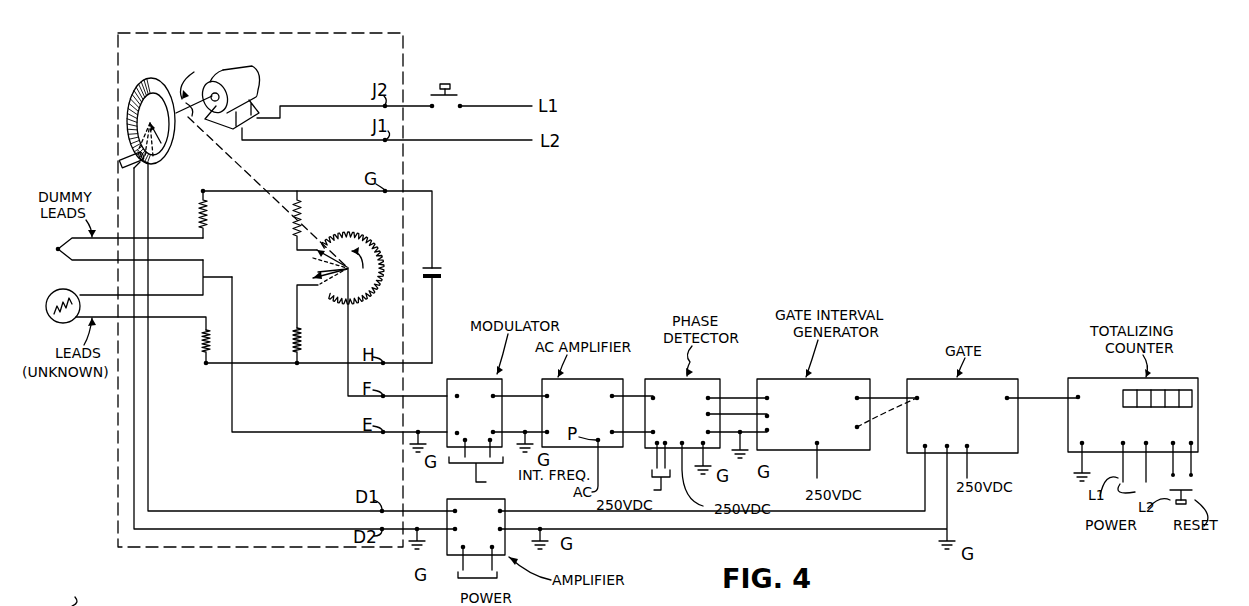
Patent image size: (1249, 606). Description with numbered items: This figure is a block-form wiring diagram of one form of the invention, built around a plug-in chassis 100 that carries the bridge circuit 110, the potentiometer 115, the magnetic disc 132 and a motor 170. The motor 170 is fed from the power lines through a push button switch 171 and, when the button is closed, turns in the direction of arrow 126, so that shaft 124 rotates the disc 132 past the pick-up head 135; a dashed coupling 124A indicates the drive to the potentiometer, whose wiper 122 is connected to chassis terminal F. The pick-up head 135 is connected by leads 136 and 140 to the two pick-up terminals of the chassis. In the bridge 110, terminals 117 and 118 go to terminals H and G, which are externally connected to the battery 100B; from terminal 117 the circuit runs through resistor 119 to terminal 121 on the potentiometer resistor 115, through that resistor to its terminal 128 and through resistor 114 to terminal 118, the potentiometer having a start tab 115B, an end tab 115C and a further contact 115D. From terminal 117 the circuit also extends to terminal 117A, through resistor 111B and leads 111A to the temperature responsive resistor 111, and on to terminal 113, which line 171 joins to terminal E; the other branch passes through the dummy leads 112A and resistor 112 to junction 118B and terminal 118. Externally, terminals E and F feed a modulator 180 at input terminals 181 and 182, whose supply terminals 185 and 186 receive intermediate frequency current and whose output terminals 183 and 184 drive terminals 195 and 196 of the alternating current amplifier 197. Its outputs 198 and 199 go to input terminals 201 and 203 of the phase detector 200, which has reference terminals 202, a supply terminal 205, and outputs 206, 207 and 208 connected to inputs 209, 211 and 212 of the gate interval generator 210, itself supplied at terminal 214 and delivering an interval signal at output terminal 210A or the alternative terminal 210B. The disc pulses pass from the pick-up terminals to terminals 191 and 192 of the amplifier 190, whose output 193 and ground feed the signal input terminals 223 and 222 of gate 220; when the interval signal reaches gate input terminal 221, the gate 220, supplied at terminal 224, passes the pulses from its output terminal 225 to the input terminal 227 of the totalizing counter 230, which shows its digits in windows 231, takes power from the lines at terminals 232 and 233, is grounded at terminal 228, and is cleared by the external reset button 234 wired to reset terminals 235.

The chassis 100 is at (393, 66).
The battery 100B is at (441, 278).
The bridge circuit 110 is at (261, 256).
The temperature responsive resistor 111 is at (57, 311).
The leads 111A is at (100, 295).
The resistor 111B is at (203, 340).
The resistor 112 is at (207, 213).
The dummy leads 112A is at (163, 259).
The terminal 113 is at (203, 278).
The resistor 114 is at (305, 210).
The potentiometer 115 is at (353, 232).
The start tab 115B is at (312, 280).
The end tab 115C is at (313, 250).
The wiper contact 115D is at (312, 259).
The bridge terminal 117 is at (297, 365).
The terminal 117A is at (206, 356).
The bridge terminal 118 is at (297, 191).
The junction 118B is at (203, 190).
The resistor 119 is at (301, 336).
The terminal 121 is at (318, 287).
The wiper 122 is at (346, 300).
The shaft 124 is at (181, 115).
The mechanical coupling 124A is at (252, 176).
The arrow 126 is at (194, 80).
The terminal 128 is at (320, 246).
The magnetic disc 132 is at (143, 80).
The pick-up head 135 is at (122, 157).
The lead 136 is at (148, 452).
The lead 140 is at (134, 484).
The motor 170 is at (250, 86).
The push button switch 171 is at (455, 94).
The modulator 180 is at (473, 376).
The input terminal 181 is at (458, 393).
The input terminal 182 is at (455, 430).
The output terminal 183 is at (495, 394).
The output terminal 184 is at (484, 470).
The supply terminal 185 is at (467, 438).
The supply terminal 186 is at (494, 430).
The amplifier 190 is at (444, 560).
The terminal 191 is at (455, 498).
The terminal 192 is at (455, 527).
The output terminal 193 is at (501, 511).
The terminal 195 is at (549, 396).
The terminal 196 is at (560, 420).
The alternating current amplifier 197 is at (580, 378).
The output terminal 198 is at (612, 398).
The output terminal 199 is at (612, 432).
The phase detector 200 is at (698, 377).
The input terminal 201 is at (655, 396).
The A.C. input terminals 202 is at (666, 460).
The input terminal 203 is at (656, 421).
The supply terminal 205 is at (684, 458).
The output terminal 206 is at (710, 396).
The output terminal 207 is at (710, 414).
The output terminal 208 is at (710, 436).
The input terminal 209 is at (769, 398).
The gate interval generator 210 is at (832, 452).
The output terminal 210A is at (857, 396).
The alternative output terminal 210B is at (859, 429).
The input terminal 211 is at (769, 416).
The input terminal 212 is at (769, 430).
The supply terminal 214 is at (817, 441).
The gate 220 is at (990, 377).
The gate input terminal 221 is at (919, 398).
The signal input terminal 222 is at (948, 444).
The signal input terminal 223 is at (925, 444).
The supply terminal 224 is at (967, 444).
The output terminal 225 is at (1006, 400).
The input terminal 227 is at (1096, 395).
The ground terminal 228 is at (1083, 442).
The totalizing counter 230 is at (1208, 368).
The windows 231 is at (1139, 392).
The input terminal 232 is at (1123, 442).
The input terminal 233 is at (1158, 439).
The reset button 234 is at (1187, 492).
The reset terminals 235 is at (1174, 442).